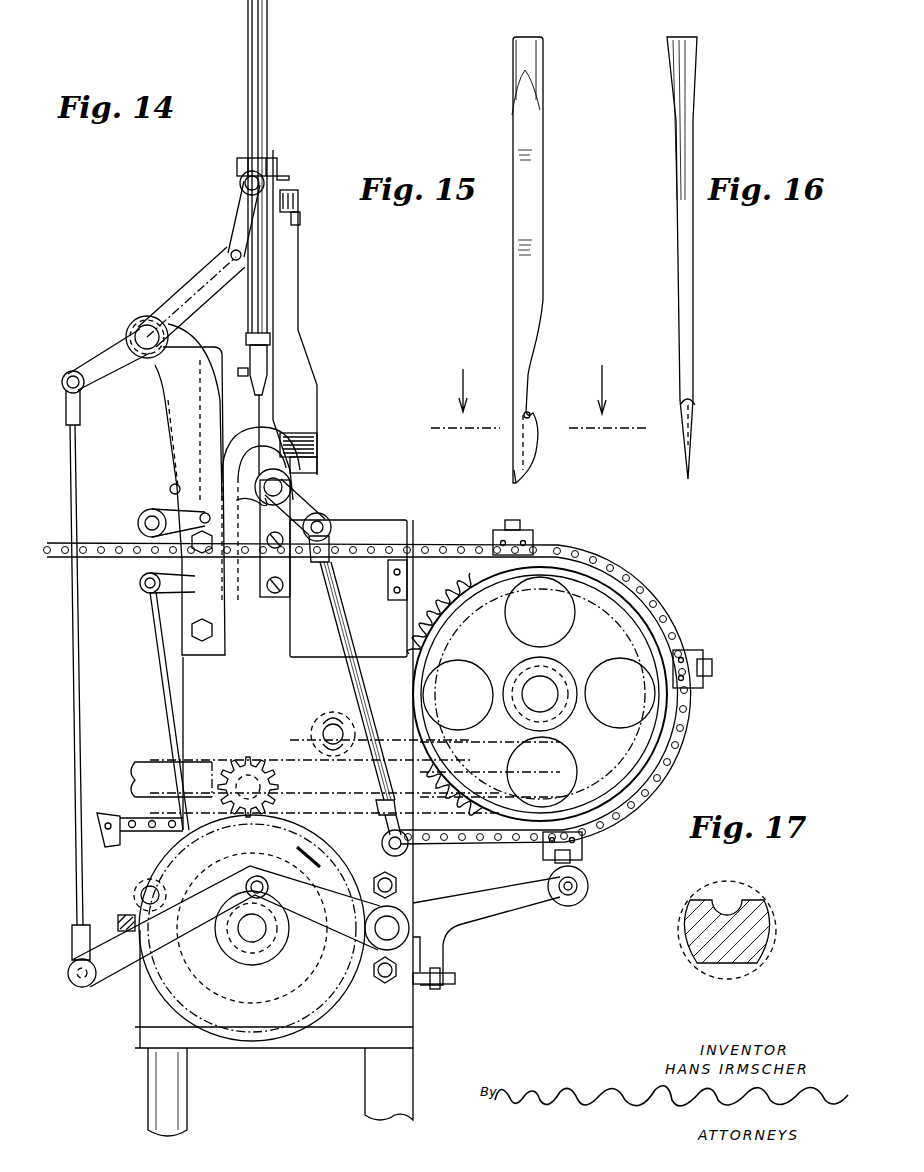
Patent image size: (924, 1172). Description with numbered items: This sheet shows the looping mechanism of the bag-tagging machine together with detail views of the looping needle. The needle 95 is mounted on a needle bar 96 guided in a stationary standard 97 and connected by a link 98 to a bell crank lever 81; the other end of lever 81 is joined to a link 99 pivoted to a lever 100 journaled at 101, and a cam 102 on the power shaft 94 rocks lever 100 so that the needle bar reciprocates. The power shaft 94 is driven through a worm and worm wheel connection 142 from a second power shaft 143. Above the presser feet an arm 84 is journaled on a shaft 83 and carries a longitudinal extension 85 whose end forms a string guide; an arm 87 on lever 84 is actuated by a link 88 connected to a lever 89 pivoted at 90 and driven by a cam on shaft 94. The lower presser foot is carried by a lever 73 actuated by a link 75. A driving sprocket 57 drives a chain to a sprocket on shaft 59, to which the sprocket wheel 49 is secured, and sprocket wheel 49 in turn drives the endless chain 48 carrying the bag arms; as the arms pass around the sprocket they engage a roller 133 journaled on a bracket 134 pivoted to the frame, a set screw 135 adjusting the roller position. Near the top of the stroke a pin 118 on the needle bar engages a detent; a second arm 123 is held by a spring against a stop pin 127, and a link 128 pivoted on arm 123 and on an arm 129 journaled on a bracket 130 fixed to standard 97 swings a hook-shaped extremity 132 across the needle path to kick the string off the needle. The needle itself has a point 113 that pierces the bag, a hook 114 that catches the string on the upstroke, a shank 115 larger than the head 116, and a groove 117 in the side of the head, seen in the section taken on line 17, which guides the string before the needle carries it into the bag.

In FIG. 14, the needle bar 96 is at (262, 106).
In FIG. 14, the stationary standard 97 is at (262, 165).
In FIG. 14, the pin 118 is at (285, 178).
In FIG. 14, the stop pin 127 is at (297, 202).
In FIG. 14, the second arm 123 is at (299, 219).
In FIG. 14, the link 98 is at (240, 212).
In FIG. 14, the bell crank lever 81 is at (206, 270).
In FIG. 14, the needle 95 is at (262, 430).
In FIG. 14, the link 128 is at (318, 410).
In FIG. 14, the bracket 130 is at (312, 440).
In FIG. 14, the arm 129 is at (318, 463).
In FIG. 14, the arm 84 is at (262, 455).
In FIG. 14, the longitudinal extension 85 is at (172, 490).
In FIG. 14, the hook-shaped extremity 132 is at (257, 500).
In FIG. 14, the shaft 83 is at (276, 488).
In FIG. 14, the arm 87 is at (306, 512).
In FIG. 14, the link 88 is at (338, 625).
In FIG. 14, the lever 73 is at (160, 598).
In FIG. 14, the link 99 is at (73, 668).
In FIG. 14, the link 75 is at (156, 684).
In FIG. 14, the driving sprocket 57 is at (244, 760).
In FIG. 14, the sprocket wheel 49 is at (446, 600).
In FIG. 14, the endless chain 48 is at (640, 588).
In FIG. 14, the shaft 59 is at (540, 692).
In FIG. 14, the lever 89 is at (413, 858).
In FIG. 14, the journal 101 is at (410, 912).
In FIG. 14, the roller 133 is at (576, 884).
In FIG. 14, the bracket 134 is at (500, 910).
In FIG. 14, the set screw 135 is at (428, 982).
In FIG. 14, the pivot 90 is at (140, 893).
In FIG. 14, the worm and worm wheel connection 142 is at (118, 920).
In FIG. 14, the lever 100 is at (86, 985).
In FIG. 14, the power shaft 94 is at (252, 930).
In FIG. 14, the cam 102 is at (240, 1035).
In FIG. 14, the power shaft 143 is at (160, 1108).
In FIG. 15, the shank 115 is at (542, 297).
In FIG. 15, the hook 114 is at (529, 412).
In FIG. 15, the head 116 is at (538, 433).
In FIG. 17, the head 116 is at (735, 935).
In FIG. 15, the point 113 is at (520, 476).
In FIG. 15, the section line 17 is at (539, 387).
In FIG. 16, the groove 117 is at (697, 440).
In FIG. 17, the groove 117 is at (728, 908).